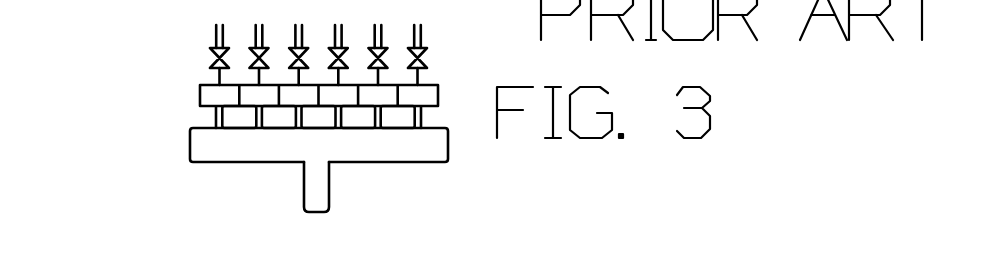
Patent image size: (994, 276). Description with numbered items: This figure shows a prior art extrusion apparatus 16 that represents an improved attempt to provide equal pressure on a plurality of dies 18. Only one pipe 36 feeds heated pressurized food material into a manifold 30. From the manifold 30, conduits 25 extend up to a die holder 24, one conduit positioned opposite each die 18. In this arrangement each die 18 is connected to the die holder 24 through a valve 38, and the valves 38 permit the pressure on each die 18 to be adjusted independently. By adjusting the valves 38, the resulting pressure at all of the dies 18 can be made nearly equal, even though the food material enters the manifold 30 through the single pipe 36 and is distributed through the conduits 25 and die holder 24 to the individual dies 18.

The extrusion apparatus 16 is at (90, 138).
The die 18 is at (429, 20).
The valve 38 is at (198, 52).
The die holder 24 is at (189, 100).
The conduit 25 is at (205, 122).
The manifold 30 is at (402, 178).
The pipe 36 is at (321, 228).